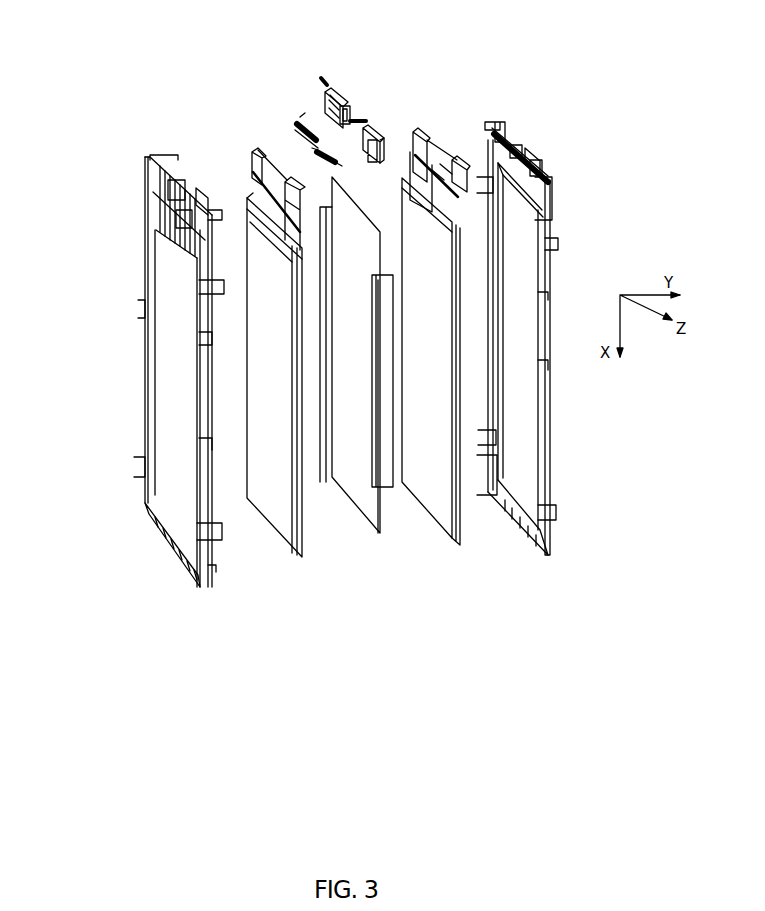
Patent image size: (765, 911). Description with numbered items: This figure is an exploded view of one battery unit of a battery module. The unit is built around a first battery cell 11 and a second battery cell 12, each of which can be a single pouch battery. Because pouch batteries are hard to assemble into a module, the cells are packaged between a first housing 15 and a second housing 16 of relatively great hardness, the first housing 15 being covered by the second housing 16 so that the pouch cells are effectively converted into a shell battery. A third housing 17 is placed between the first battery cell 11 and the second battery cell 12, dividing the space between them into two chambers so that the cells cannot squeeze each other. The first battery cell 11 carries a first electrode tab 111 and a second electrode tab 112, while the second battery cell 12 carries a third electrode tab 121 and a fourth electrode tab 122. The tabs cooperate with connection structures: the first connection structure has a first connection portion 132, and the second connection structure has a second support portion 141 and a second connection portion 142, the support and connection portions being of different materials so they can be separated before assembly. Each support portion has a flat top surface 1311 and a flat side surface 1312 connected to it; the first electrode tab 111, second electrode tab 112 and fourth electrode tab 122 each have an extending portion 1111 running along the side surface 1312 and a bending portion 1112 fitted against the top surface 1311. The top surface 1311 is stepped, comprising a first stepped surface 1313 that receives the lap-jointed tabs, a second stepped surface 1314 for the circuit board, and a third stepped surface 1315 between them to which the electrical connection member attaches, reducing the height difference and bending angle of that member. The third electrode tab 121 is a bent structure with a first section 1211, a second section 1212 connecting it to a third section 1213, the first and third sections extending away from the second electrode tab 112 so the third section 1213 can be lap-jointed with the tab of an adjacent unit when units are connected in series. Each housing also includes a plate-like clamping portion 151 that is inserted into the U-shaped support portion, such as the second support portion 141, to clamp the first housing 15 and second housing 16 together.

The first battery cell 11 is at (204, 342).
The first electrode tab 111 is at (262, 152).
The extending portion 1111 is at (253, 172).
The bending portion 1112 is at (287, 182).
The second electrode tab 112 is at (250, 192).
The second battery cell 12 is at (507, 334).
The third electrode tab 121 is at (514, 130).
The first section 1211 is at (437, 187).
The second section 1212 is at (445, 178).
The third section 1213 is at (467, 157).
The fourth electrode tab 122 is at (418, 138).
The top surface 1311 is at (330, 88).
The side surface 1312 is at (321, 78).
The first stepped surface 1313 is at (327, 93).
The second stepped surface 1314 is at (344, 108).
The third stepped surface 1315 is at (362, 124).
The first connection portion 132 is at (302, 118).
The second support portion 141 is at (385, 128).
The second connection portion 142 is at (320, 153).
The first housing 15 is at (172, 346).
The clamping portion 151 is at (160, 233).
The second housing 16 is at (550, 530).
The third housing 17 is at (362, 473).